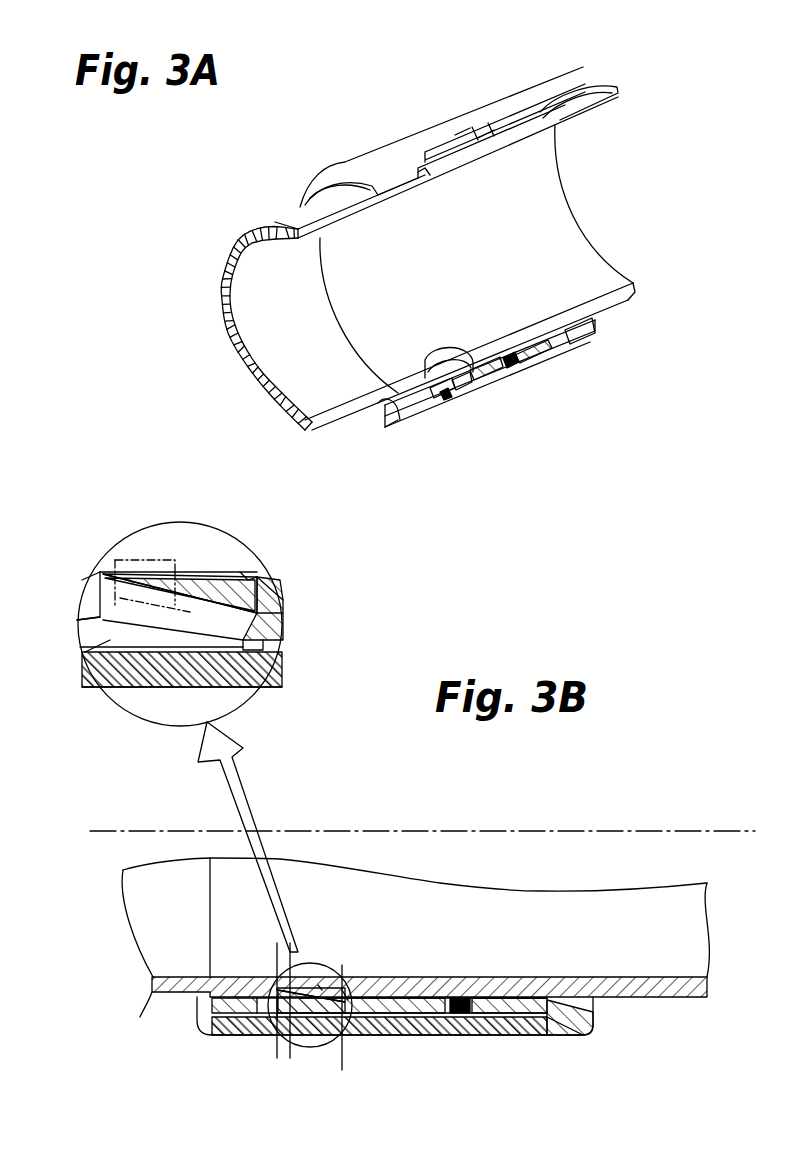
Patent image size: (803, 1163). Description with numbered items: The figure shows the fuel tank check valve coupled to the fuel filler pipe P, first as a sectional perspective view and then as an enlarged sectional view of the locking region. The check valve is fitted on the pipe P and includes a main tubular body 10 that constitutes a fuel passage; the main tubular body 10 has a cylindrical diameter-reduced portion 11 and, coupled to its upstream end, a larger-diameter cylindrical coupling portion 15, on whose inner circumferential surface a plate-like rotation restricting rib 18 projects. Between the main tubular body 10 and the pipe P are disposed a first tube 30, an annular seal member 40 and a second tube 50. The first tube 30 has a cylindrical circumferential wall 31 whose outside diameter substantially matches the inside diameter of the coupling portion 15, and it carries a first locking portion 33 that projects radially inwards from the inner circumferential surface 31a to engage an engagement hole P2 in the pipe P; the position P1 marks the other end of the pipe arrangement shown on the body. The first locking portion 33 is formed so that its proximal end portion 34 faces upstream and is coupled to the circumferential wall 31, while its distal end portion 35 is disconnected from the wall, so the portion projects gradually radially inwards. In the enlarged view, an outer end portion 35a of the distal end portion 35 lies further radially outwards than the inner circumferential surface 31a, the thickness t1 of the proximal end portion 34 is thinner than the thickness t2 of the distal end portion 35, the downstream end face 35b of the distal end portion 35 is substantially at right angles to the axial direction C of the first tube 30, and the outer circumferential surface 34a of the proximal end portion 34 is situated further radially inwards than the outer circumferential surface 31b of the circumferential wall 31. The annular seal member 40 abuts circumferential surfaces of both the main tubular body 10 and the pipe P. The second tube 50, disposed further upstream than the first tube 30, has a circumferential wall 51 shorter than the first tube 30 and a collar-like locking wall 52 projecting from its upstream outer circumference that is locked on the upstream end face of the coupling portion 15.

In FIG. 3A, the main tubular body 10 is at (412, 118).
In FIG. 3B, the main tubular body 10 is at (490, 1042).
In FIG. 3A, the diameter-reduced portion 11 is at (285, 228).
In FIG. 3B, the diameter-reduced portion 11 is at (181, 990).
In FIG. 3A, the coupling portion 15 is at (468, 133).
In FIG. 3B, the coupling portion 15 is at (517, 1035).
In FIG. 3A, the rotation restricting rib 18 is at (400, 185).
In FIG. 3A, the first tube 30 is at (397, 408).
In FIG. 3B, the first tube 30 is at (355, 1034).
In FIG. 3A, the circumferential wall 31 is at (484, 372).
In FIG. 3B, the circumferential wall 31 is at (128, 680).
In FIG. 3B, the inner circumferential surface 31a is at (410, 990).
In FIG. 3B, the outer circumferential surface 31b is at (405, 1035).
In FIG. 3A, the first locking portion 33 is at (452, 392).
In FIG. 3B, the first locking portion 33 is at (318, 987).
In FIG. 3A, the proximal end portion 34 is at (462, 383).
In FIG. 3B, the proximal end portion 34 is at (376, 1000).
In FIG. 3B, the outer circumferential surface 34a is at (268, 653).
In FIG. 3A, the distal end portion 35 is at (436, 385).
In FIG. 3B, the distal end portion 35 is at (305, 988).
In FIG. 3B, the outer end portion 35a is at (110, 632).
In FIG. 3B, the downstream end face 35b is at (98, 605).
In FIG. 3A, the annular seal member 40 is at (514, 354).
In FIG. 3B, the annular seal member 40 is at (462, 1015).
In FIG. 3A, the second tube 50 is at (600, 325).
In FIG. 3B, the second tube 50 is at (600, 1022).
In FIG. 3A, the circumferential wall 51 is at (545, 345).
In FIG. 3B, the circumferential wall 51 is at (508, 992).
In FIG. 3A, the collar-like locking wall 52 is at (582, 336).
In FIG. 3B, the collar-like locking wall 52 is at (573, 1036).
In FIG. 3A, the pipe P is at (603, 88).
In FIG. 3B, the pipe P is at (680, 997).
In FIG. 3A, the first plate end P1 is at (438, 175).
In FIG. 3A, the engagement hole P2 is at (430, 360).
In FIG. 3B, the engagement hole P2 is at (347, 997).
In FIG. 3B, the axial direction C is at (578, 830).
In FIG. 3B, the thickness of proximal end portion t1 is at (342, 1062).
In FIG. 3B, the thickness of distal end portion t2 is at (277, 1052).